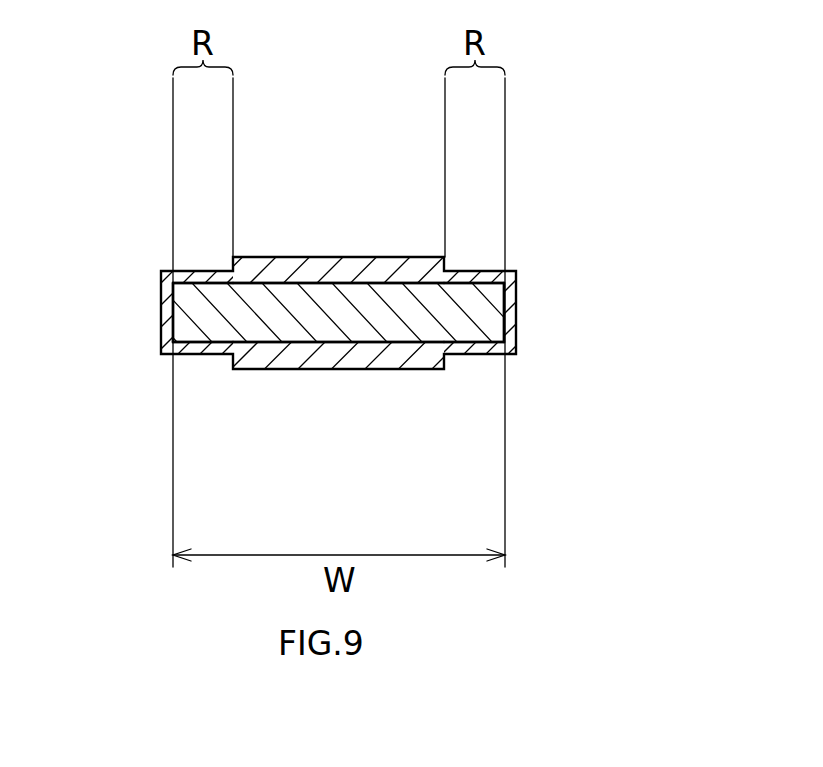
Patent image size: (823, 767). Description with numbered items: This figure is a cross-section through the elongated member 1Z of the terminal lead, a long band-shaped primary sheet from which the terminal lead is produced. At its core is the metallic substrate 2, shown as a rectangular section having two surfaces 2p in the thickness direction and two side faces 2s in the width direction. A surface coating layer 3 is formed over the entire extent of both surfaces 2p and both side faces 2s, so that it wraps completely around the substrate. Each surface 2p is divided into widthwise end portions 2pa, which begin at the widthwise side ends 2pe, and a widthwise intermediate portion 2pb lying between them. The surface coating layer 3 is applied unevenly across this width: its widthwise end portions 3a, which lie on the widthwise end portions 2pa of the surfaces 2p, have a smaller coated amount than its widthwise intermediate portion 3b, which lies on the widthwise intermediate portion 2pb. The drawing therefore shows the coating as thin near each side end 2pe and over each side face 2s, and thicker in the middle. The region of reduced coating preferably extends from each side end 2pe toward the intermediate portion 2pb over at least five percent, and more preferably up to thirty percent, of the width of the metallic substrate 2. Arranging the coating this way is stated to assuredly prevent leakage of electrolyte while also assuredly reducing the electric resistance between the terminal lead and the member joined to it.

The elongated member of the terminal lead 1Z is at (629, 147).
The metallic substrate 2 is at (401, 312).
The surface of the metallic substrate 2p is at (367, 288).
The widthwise end portion of the surface 2pa is at (190, 283).
The widthwise intermediate portion of the surface 2pb is at (317, 267).
The widthwise side end of the surface 2pe is at (161, 273).
The side face of the metallic substrate 2s is at (173, 310).
The surface coating layer 3 is at (273, 265).
The widthwise end portion of the surface coating layer 3a is at (203, 272).
The widthwise intermediate portion of the surface coating layer 3b is at (330, 268).